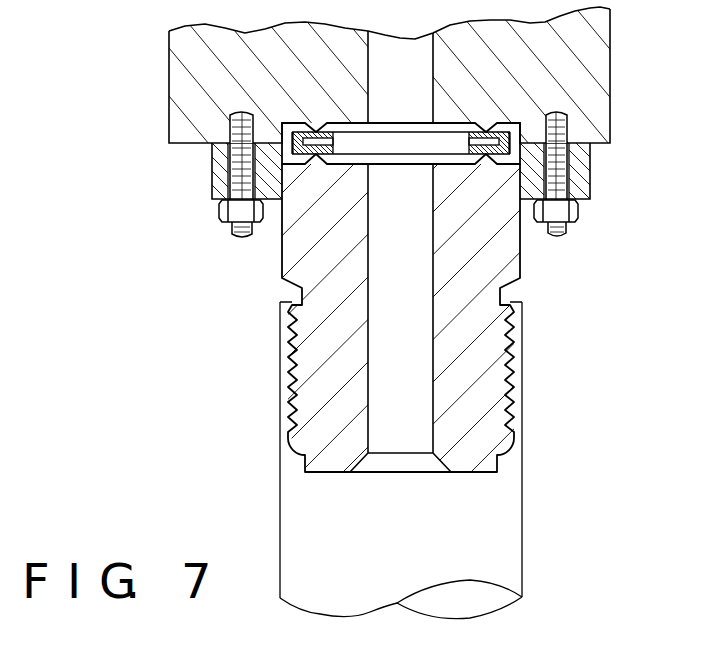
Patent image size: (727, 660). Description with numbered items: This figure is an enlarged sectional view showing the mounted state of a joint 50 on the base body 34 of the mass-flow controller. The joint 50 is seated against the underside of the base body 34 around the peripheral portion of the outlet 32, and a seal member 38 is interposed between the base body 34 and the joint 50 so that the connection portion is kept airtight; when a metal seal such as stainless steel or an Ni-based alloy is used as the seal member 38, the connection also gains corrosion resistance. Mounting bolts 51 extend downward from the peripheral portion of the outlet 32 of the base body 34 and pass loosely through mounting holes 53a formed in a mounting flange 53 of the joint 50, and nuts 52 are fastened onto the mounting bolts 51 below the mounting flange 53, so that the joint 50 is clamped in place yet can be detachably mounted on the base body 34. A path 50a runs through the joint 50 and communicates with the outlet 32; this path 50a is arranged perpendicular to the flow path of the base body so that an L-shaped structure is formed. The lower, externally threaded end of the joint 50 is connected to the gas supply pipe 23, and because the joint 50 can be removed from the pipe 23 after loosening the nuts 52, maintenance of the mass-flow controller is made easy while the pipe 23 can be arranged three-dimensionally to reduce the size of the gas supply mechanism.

The pipe 23 is at (512, 523).
The outlet 32 is at (423, 58).
The base body 34 is at (613, 62).
The seal member 38 is at (298, 155).
The joint 50 is at (524, 257).
The path 50a is at (440, 352).
The mounting bolt 51 is at (232, 234).
The nut 52 is at (222, 211).
The mounting flange 53 is at (218, 158).
The mounting hole 53a is at (230, 174).